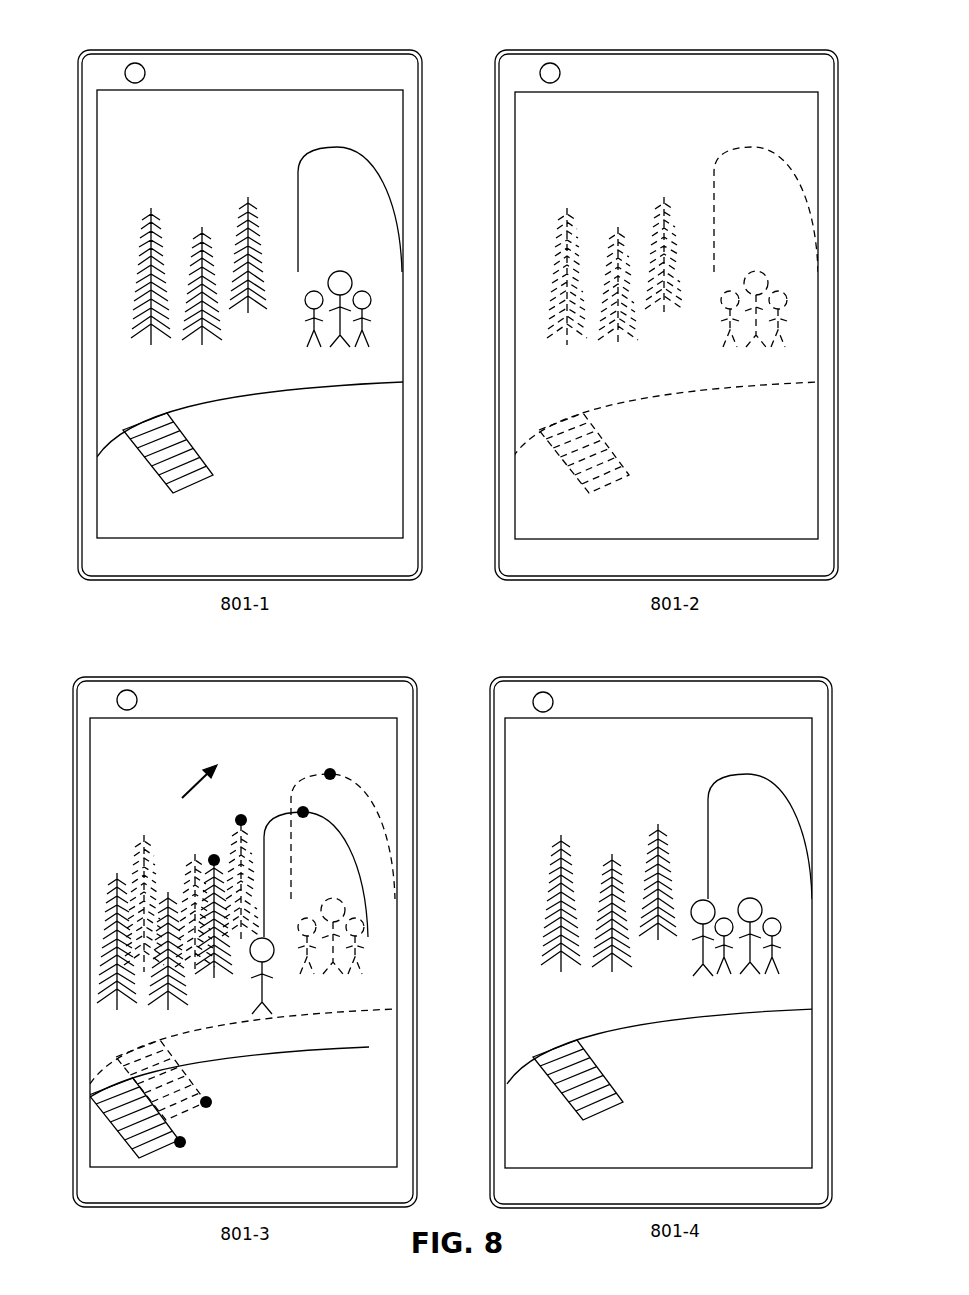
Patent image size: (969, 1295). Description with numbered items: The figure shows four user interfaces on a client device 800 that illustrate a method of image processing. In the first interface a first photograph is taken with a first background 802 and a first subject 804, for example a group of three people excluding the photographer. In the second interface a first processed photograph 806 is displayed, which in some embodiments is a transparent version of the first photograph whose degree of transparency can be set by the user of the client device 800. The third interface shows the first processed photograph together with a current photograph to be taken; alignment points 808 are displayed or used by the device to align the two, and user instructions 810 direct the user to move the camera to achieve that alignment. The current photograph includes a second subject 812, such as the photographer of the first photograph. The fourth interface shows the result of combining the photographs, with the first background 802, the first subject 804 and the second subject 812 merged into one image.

The client device 800 is at (83, 55).
The first background 802 is at (367, 112).
The first subject 804 is at (362, 272).
The first processed photograph 806 is at (713, 117).
The alignment points 808 is at (243, 815).
The user instructions 810 is at (178, 748).
The second subject 812 is at (270, 1012).